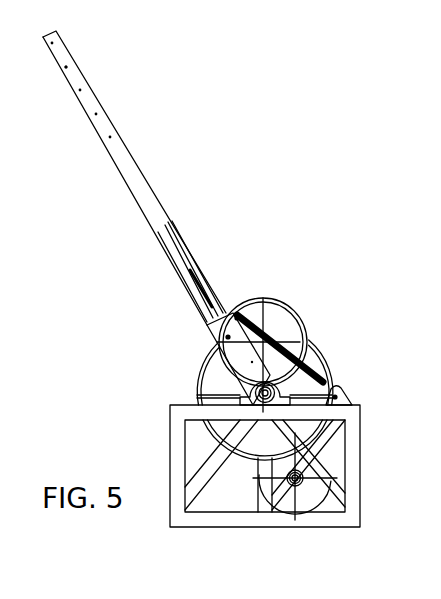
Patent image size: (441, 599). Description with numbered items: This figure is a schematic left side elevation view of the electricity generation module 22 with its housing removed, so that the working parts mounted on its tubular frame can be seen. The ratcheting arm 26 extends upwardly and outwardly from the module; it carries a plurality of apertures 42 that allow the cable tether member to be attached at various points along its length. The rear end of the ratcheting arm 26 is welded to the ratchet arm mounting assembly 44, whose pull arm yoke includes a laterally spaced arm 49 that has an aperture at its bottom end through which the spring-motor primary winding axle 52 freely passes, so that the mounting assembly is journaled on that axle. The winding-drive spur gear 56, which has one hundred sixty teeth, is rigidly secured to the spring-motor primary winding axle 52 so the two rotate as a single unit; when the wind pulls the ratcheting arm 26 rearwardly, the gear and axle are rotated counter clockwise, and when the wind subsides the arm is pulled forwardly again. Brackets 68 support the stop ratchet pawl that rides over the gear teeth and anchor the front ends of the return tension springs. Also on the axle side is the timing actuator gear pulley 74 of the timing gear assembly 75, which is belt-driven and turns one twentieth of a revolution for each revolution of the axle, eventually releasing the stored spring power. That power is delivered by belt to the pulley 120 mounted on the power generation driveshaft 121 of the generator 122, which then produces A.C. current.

The electricity generation module 22 is at (290, 194).
The ratcheting arm 26 is at (147, 181).
The apertures 42 is at (65, 67).
The ratchet arm mounting assembly 44 is at (207, 327).
The arm 49 is at (224, 354).
The spring-motor primary winding axle 52 is at (265, 396).
The winding-drive spur gear 56 is at (222, 428).
The brackets 68 is at (343, 398).
The timing actuator gear pulley 74 is at (278, 318).
The timing gear assembly 75 is at (273, 293).
The pulley 120 is at (298, 486).
The power generation driveshaft 121 is at (300, 474).
The generator 122 is at (315, 490).